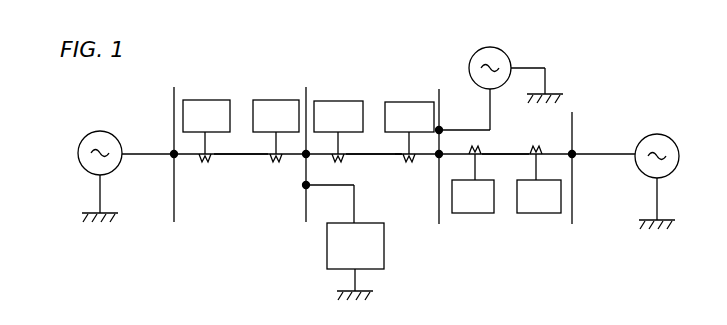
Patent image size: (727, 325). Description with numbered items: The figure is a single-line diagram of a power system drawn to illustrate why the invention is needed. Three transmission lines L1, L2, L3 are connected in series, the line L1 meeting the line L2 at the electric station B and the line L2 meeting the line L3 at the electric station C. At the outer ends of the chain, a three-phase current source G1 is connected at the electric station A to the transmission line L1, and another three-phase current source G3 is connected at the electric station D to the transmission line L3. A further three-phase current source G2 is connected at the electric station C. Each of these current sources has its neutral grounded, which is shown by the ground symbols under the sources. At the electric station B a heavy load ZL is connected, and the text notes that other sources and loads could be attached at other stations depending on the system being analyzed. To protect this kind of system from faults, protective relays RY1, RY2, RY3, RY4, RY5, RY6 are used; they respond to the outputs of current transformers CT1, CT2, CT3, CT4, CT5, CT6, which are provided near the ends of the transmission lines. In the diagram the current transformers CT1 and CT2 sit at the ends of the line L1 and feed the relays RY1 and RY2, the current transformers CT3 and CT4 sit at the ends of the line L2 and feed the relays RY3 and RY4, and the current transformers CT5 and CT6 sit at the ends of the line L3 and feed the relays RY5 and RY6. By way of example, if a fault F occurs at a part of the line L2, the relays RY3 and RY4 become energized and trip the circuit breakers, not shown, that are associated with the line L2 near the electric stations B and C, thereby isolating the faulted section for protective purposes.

The three-phase current source G1 is at (85, 137).
The three-phase current source G2 is at (498, 48).
The three-phase current source G3 is at (662, 135).
The electric station A is at (188, 81).
The electric station B is at (319, 81).
The electric station C is at (447, 79).
The electric station D is at (590, 103).
The protective relay RY1 is at (206, 100).
The protective relay RY2 is at (268, 100).
The protective relay RY3 is at (338, 101).
The protective relay RY4 is at (398, 102).
The protective relay RY5 is at (468, 213).
The protective relay RY6 is at (536, 213).
The current transformer CT1 is at (204, 164).
The current transformer CT2 is at (275, 164).
The current transformer CT3 is at (341, 162).
The current transformer CT4 is at (409, 164).
The current transformer CT5 is at (482, 138).
The current transformer CT6 is at (538, 149).
The transmission line L1 is at (238, 157).
The transmission line L2 is at (364, 154).
The transmission line L3 is at (522, 150).
The fault F is at (398, 170).
The heavy load ZL is at (345, 242).